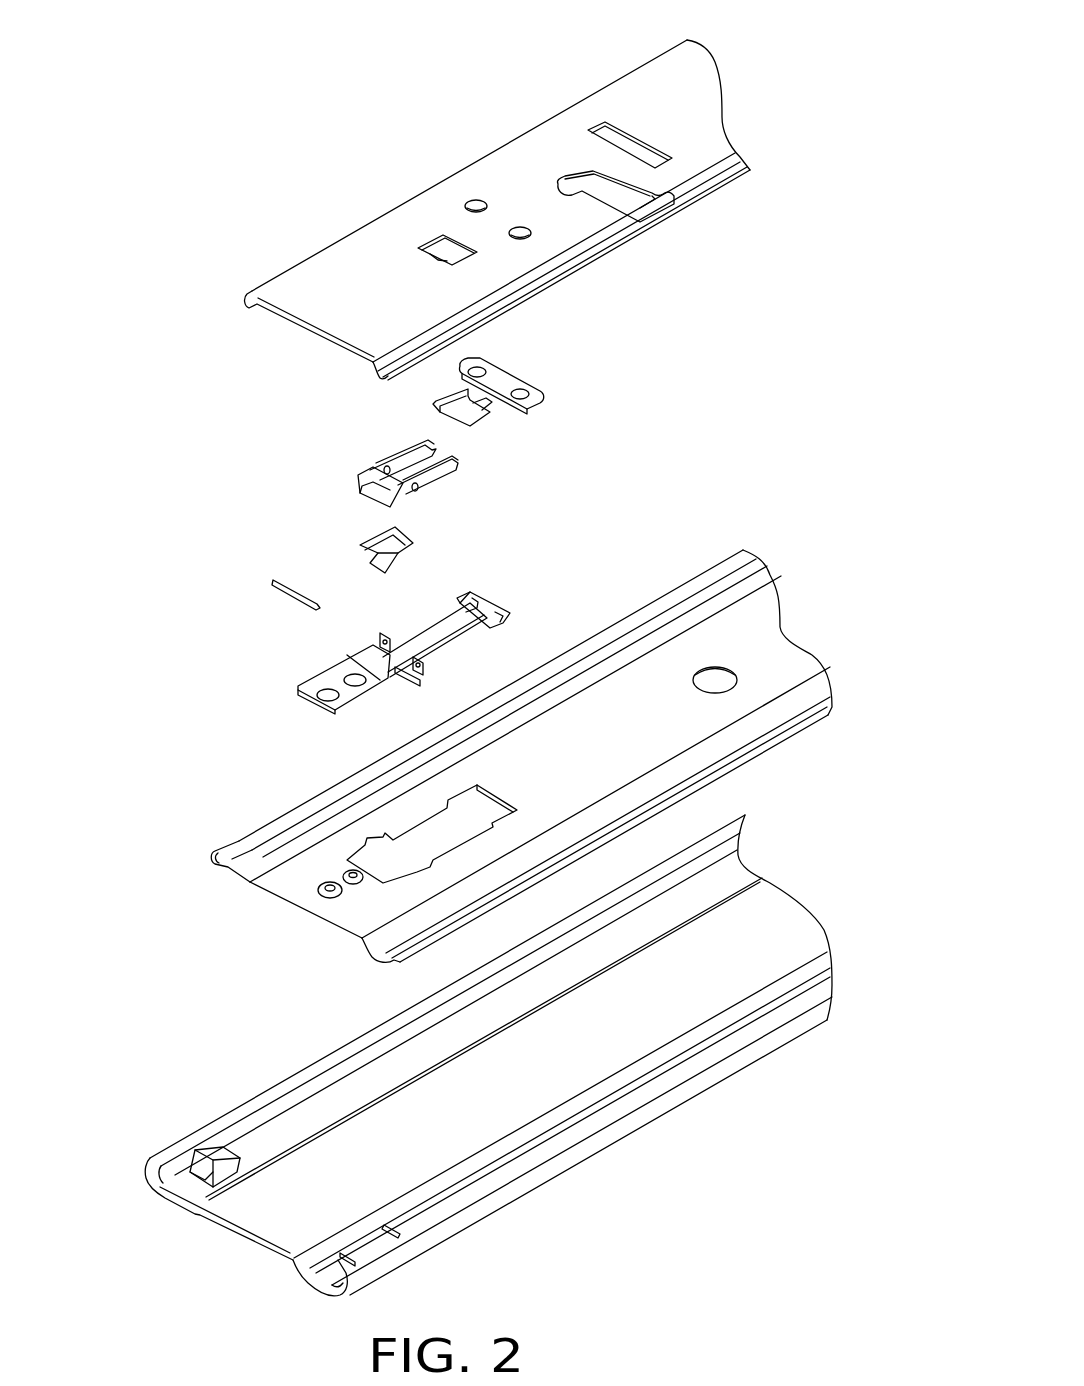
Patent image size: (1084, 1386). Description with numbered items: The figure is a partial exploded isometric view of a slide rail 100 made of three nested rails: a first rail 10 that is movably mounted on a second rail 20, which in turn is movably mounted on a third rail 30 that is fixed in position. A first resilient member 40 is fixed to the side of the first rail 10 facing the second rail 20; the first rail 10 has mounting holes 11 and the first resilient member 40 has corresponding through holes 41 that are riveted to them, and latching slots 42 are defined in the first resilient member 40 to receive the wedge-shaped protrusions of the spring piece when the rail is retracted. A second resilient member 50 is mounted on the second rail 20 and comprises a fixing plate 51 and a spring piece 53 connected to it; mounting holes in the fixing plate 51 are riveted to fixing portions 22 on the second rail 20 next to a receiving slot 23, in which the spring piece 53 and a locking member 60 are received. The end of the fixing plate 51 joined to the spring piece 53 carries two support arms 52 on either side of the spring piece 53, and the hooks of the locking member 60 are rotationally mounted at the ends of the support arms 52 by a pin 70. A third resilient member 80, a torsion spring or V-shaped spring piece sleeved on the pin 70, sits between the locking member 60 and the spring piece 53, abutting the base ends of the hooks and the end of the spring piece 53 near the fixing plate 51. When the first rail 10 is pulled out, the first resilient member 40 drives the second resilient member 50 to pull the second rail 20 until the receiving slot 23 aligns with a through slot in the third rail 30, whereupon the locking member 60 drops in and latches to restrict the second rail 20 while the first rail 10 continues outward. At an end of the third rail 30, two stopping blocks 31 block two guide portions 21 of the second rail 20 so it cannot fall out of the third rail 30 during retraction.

The slide rail 100 is at (306, 30).
The first rail 10 is at (290, 246).
The mounting holes 11 is at (470, 198).
The second rail 20 is at (810, 618).
The guide portions 21 is at (226, 849).
The fixing portions 22 is at (325, 884).
The receiving slot 23 is at (425, 838).
The third rail 30 is at (810, 885).
The stopping blocks 31 is at (210, 1163).
The first resilient member 40 is at (508, 363).
The through holes 41 is at (536, 388).
The latching slots 42 is at (484, 413).
The second resilient member 50 is at (278, 670).
The fixing plate 51 is at (340, 666).
The support arms 52 is at (407, 675).
The spring piece 53 is at (433, 636).
The locking member 60 is at (373, 478).
The pin 70 is at (283, 589).
The third resilient member 80 is at (402, 530).